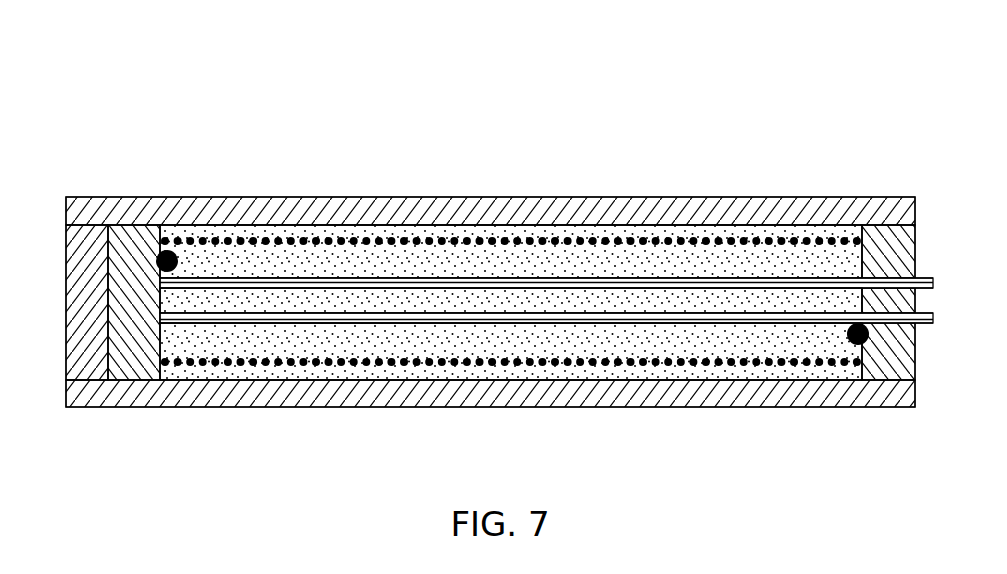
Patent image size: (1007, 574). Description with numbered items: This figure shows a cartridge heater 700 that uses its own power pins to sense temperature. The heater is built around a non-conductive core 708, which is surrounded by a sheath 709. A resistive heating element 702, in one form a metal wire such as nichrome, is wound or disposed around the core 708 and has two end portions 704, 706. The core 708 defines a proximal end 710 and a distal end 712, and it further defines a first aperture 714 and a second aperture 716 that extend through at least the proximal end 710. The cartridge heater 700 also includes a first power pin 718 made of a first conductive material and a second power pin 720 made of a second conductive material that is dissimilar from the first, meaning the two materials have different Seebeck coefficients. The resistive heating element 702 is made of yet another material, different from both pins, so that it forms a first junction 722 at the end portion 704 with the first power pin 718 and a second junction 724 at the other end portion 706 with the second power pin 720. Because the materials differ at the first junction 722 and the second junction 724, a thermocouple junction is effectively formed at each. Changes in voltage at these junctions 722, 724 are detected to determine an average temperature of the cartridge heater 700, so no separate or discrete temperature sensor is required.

The cartridge heater 700 is at (790, 70).
The resistive heating element 702 is at (330, 237).
The end portion 704 is at (838, 374).
The end portion 706 is at (162, 221).
The core 708 is at (277, 257).
The sheath 709 is at (243, 217).
The proximal end 710 is at (895, 188).
The distal end 712 is at (85, 420).
The first aperture 714 is at (488, 277).
The second aperture 716 is at (653, 331).
The first power pin 718 is at (775, 318).
The second power pin 720 is at (585, 288).
The first junction 722 is at (866, 337).
The second junction 724 is at (167, 250).